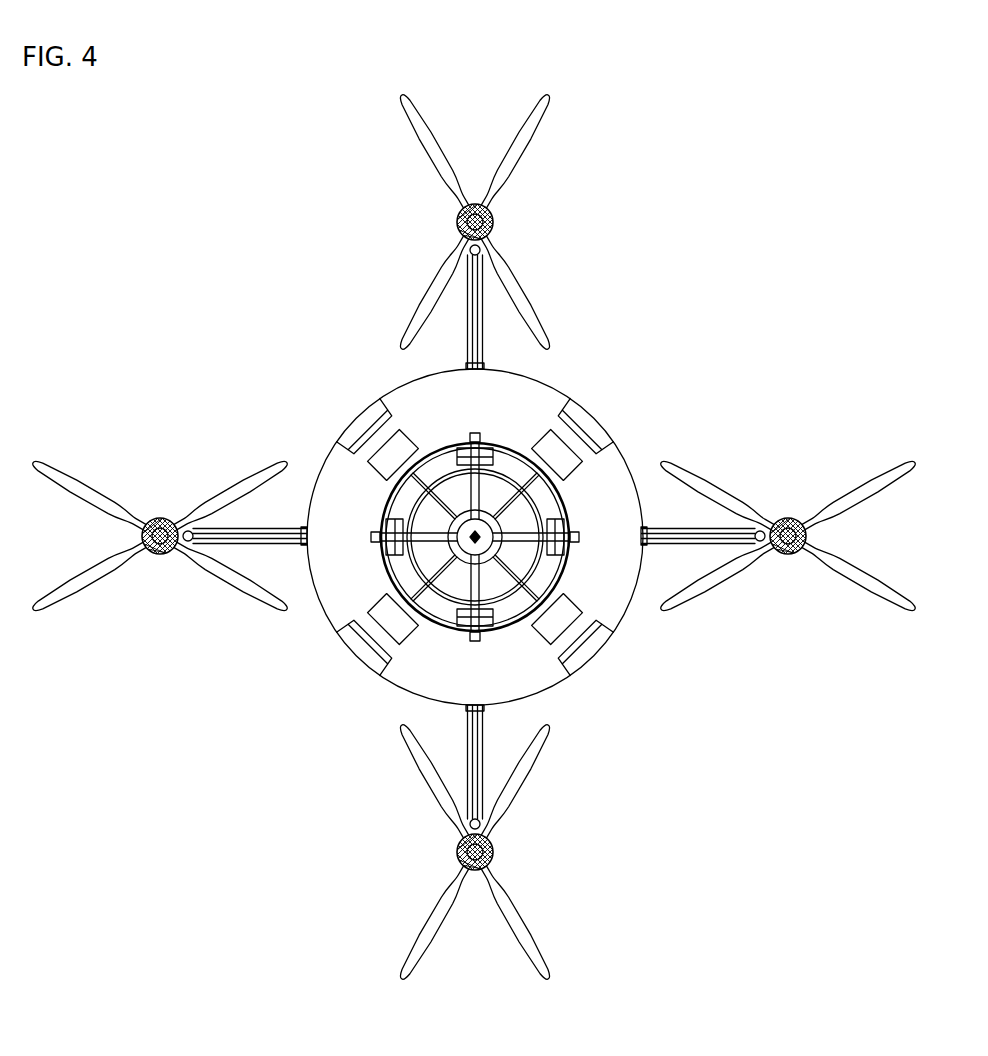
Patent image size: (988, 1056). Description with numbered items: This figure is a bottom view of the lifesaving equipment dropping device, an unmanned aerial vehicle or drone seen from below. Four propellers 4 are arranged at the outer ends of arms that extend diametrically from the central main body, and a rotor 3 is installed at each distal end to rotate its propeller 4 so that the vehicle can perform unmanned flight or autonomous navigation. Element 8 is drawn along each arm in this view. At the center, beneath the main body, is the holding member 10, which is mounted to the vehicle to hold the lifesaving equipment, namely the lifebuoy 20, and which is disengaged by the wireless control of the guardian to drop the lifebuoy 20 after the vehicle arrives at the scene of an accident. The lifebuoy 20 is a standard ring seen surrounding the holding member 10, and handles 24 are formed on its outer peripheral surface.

The rotor 3 is at (455, 212).
The propeller 4 is at (440, 161).
The arm 8 is at (483, 313).
The holding member 10 is at (384, 571).
The lifebuoy 20 is at (613, 470).
The handle 24 is at (595, 655).